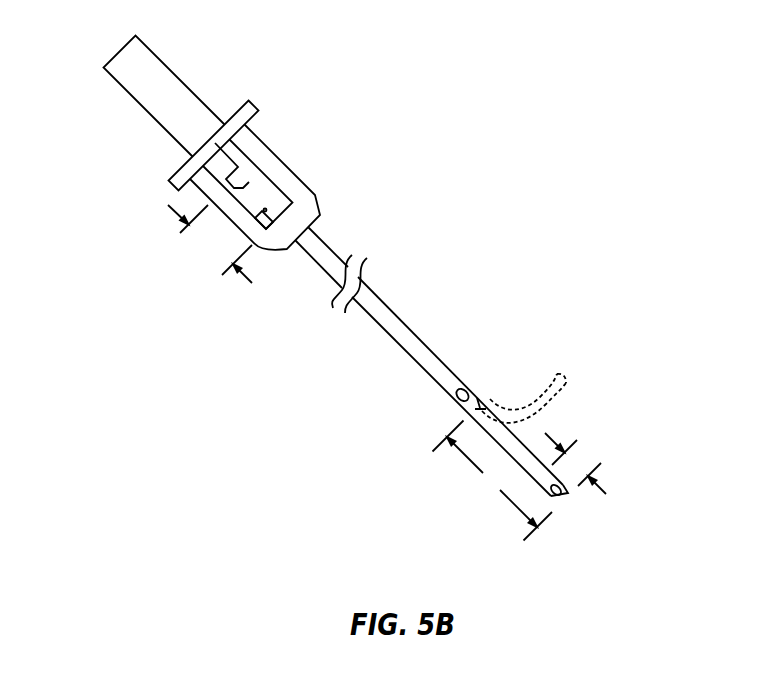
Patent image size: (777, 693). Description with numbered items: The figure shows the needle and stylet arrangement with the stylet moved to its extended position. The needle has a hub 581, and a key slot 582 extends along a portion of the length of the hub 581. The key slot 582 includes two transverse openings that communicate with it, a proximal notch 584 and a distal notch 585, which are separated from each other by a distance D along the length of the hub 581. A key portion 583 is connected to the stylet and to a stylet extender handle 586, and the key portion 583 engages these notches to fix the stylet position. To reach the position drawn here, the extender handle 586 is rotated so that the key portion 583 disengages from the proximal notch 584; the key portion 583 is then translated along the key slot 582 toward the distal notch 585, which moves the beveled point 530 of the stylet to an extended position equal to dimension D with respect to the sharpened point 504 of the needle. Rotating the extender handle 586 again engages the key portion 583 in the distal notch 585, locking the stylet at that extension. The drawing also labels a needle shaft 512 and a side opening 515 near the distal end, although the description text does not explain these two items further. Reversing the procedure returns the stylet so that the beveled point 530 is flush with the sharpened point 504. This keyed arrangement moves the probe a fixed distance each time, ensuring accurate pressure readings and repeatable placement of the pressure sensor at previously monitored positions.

The stylet extender handle 586 is at (128, 91).
The hub 581 is at (265, 210).
The key slot 582 is at (310, 190).
The key portion 583 is at (265, 211).
The proximal notch 584 is at (226, 184).
The distal notch 585 is at (263, 226).
The beveled point 530 is at (560, 499).
The needle tip 512 is at (569, 493).
The side eyelet 515 is at (462, 388).
The sharpened point 504 is at (481, 397).